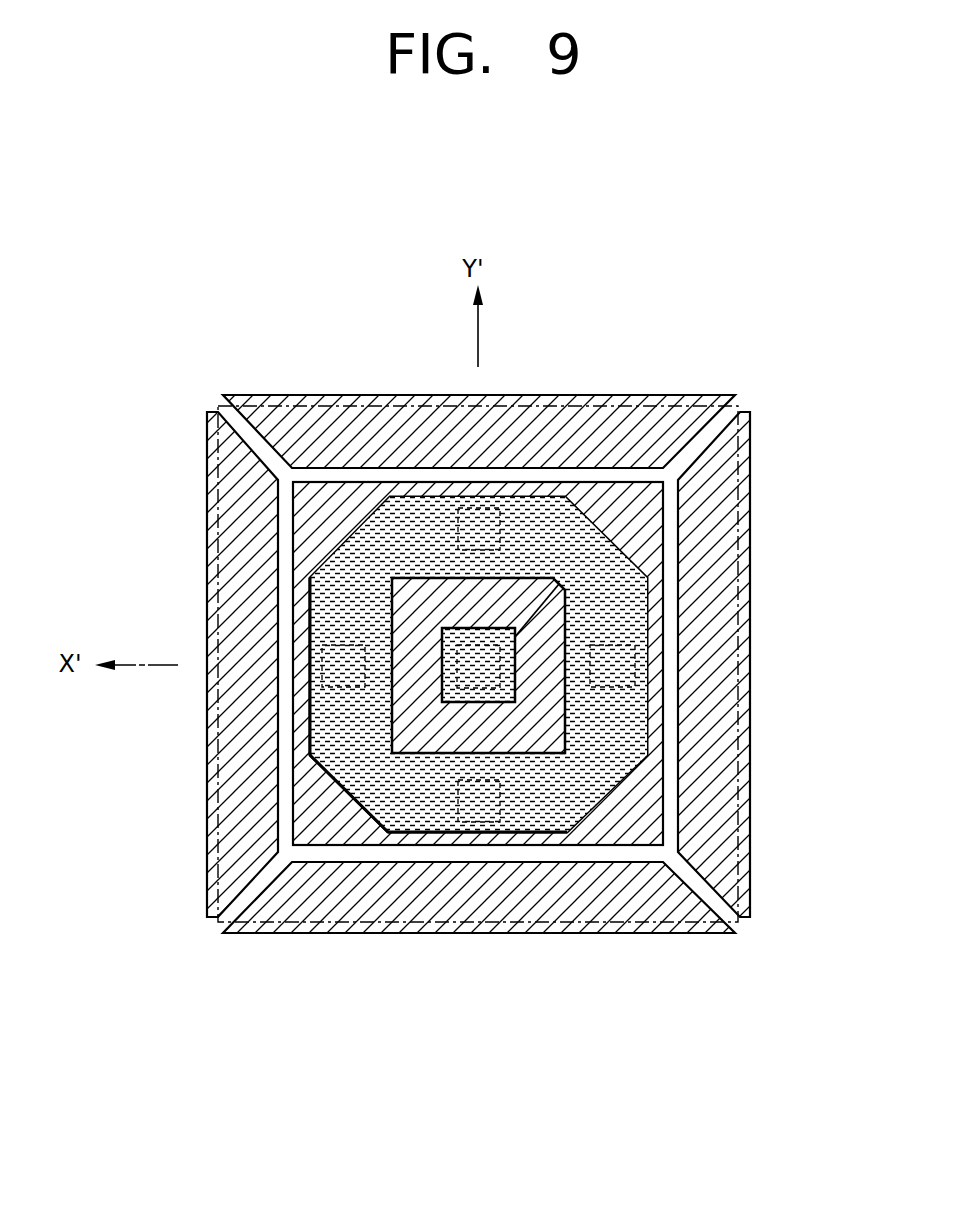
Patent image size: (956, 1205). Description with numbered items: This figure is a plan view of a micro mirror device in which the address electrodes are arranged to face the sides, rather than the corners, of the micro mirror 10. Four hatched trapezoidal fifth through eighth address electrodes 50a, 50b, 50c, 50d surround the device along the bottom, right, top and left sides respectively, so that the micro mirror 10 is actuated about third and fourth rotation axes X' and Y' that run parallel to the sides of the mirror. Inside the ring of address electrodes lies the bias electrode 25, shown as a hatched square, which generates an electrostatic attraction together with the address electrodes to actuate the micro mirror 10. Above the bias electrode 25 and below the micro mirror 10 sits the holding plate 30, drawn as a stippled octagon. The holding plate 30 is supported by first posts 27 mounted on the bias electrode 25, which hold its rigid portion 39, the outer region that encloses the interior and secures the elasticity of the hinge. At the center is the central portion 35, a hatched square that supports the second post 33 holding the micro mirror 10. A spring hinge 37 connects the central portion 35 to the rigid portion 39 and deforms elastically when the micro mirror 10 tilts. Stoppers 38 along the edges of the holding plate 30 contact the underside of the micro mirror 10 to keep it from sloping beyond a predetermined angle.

The micro mirror 10 is at (750, 455).
The bias electrode 25 is at (647, 523).
The first post 27 is at (500, 523).
The holding plate 30 is at (617, 787).
The second post 33 is at (512, 670).
The central portion 35 is at (513, 657).
The spring hinge 37 is at (338, 785).
The stopper 38 is at (305, 703).
The rigid portion 39 is at (622, 725).
The fifth address electrode 50a is at (390, 905).
The sixth address electrode 50b is at (720, 580).
The seventh address electrode 50c is at (392, 420).
The eighth address electrode 50d is at (222, 580).